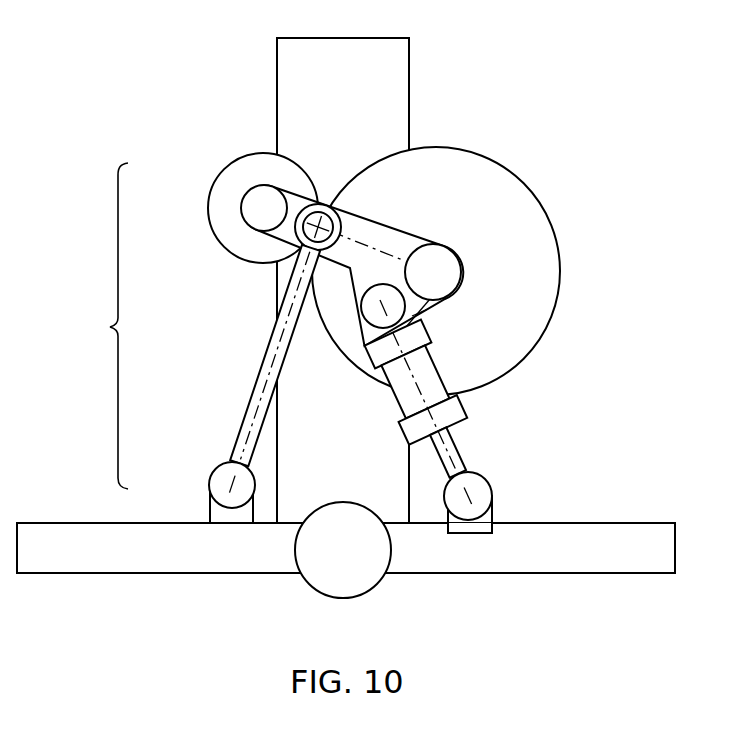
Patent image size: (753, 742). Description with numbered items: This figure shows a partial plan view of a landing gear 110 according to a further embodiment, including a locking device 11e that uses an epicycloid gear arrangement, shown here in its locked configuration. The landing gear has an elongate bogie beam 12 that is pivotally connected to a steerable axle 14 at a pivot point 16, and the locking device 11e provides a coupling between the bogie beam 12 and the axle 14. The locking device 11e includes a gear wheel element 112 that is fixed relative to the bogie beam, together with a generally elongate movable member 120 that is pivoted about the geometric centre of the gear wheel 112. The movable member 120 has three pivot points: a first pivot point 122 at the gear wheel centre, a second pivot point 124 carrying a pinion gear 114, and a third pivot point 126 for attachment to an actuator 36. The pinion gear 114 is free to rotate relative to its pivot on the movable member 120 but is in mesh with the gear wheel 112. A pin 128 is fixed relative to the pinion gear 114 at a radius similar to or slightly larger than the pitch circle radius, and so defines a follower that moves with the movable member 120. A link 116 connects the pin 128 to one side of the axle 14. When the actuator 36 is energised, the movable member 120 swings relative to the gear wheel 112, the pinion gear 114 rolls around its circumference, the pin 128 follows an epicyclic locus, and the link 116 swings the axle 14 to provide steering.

The bogie beam 12 is at (385, 115).
The axle 14 is at (548, 555).
The pivot point 16 is at (355, 568).
The actuator 36 is at (465, 452).
The landing gear 110 is at (622, 149).
The gear wheel element 112 is at (559, 299).
The pinion gear 114 is at (242, 262).
The link 116 is at (238, 428).
The movable member 120 is at (452, 218).
The first pivot point 122 is at (463, 275).
The second pivot point 124 is at (256, 204).
The third pivot point 126 is at (395, 303).
The pin 128 is at (340, 210).
The locking device 11e is at (108, 327).